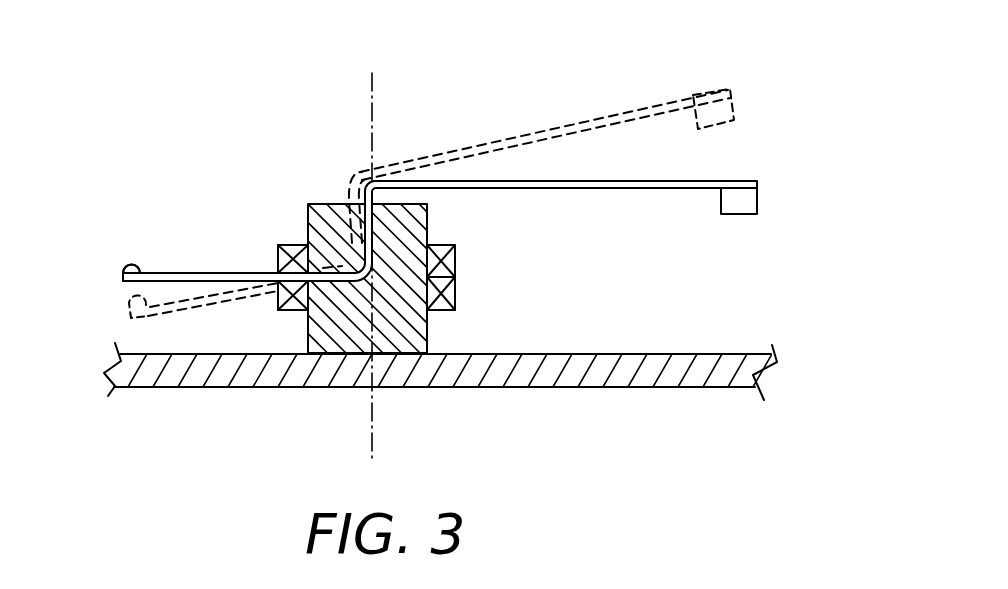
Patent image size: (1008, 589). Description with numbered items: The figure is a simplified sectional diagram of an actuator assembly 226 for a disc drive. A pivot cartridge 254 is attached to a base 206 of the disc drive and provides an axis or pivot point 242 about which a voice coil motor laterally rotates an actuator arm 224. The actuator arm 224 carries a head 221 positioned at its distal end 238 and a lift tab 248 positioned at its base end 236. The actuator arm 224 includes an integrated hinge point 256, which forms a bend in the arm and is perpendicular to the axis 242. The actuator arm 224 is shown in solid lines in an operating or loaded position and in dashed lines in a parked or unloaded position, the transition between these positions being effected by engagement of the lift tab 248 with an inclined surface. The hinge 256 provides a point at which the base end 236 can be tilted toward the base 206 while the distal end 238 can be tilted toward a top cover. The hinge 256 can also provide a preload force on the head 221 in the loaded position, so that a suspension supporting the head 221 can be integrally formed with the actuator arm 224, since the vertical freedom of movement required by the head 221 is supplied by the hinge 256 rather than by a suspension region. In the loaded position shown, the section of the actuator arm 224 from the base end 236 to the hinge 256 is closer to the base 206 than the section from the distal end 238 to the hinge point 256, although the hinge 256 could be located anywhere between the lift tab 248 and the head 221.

The base 206 is at (610, 369).
The head 221 is at (737, 203).
The actuator arm 224 is at (202, 273).
The actuator assembly 226 is at (143, 115).
The base end 236 is at (146, 266).
The distal end 238 is at (770, 184).
The axis or pivot point 242 is at (372, 85).
The lift tab 248 is at (126, 272).
The pivot cartridge 254 is at (428, 323).
The hinge point 256 is at (352, 225).